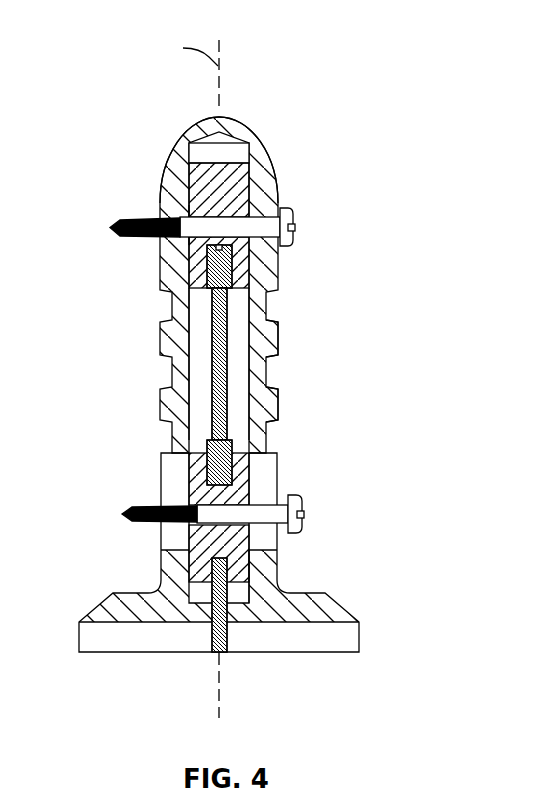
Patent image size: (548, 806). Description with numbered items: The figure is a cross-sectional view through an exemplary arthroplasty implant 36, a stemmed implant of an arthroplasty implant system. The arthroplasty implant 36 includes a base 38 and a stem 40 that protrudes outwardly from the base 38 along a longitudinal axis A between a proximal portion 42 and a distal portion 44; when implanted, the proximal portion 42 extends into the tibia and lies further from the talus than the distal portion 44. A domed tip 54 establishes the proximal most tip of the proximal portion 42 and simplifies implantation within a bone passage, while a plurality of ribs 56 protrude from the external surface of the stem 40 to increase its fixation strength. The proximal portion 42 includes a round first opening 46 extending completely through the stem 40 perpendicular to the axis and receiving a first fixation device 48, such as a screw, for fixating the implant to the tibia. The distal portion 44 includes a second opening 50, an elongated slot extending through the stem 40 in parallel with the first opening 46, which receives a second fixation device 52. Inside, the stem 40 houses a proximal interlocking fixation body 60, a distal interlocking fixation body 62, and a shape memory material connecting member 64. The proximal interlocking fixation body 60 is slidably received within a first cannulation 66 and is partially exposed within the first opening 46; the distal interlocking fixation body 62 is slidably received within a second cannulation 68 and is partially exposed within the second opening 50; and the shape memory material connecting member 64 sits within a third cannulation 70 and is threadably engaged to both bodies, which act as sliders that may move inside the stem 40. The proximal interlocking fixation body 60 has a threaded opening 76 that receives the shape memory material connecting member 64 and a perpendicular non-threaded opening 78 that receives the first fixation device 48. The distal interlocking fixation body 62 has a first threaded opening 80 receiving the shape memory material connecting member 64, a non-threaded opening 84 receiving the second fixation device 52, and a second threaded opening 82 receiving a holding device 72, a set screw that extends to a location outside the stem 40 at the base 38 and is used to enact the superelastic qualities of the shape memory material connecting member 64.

The arthroplasty implant 36 is at (267, 38).
The base 38 is at (361, 640).
The stem 40 is at (263, 433).
The proximal portion 42 is at (159, 172).
The distal portion 44 is at (91, 555).
The first opening 46 is at (262, 214).
The first fixation device 48 is at (291, 226).
The second opening 50 is at (272, 503).
The second fixation device 52 is at (301, 524).
The domed tip 54 is at (243, 128).
The ribs 56 is at (280, 342).
The proximal interlocking fixation body 60 is at (243, 173).
The distal interlocking fixation body 62 is at (240, 537).
The shape memory material connecting member 64 is at (228, 390).
The first cannulation 66 is at (196, 152).
The second cannulation 68 is at (202, 596).
The third cannulation 70 is at (200, 358).
The holding device 72 is at (228, 638).
The threaded opening 76 is at (280, 288).
The non-threaded opening 78 is at (205, 216).
The first threaded opening 80 is at (205, 462).
The second threaded opening 82 is at (247, 567).
The non-threaded opening 84 is at (205, 493).